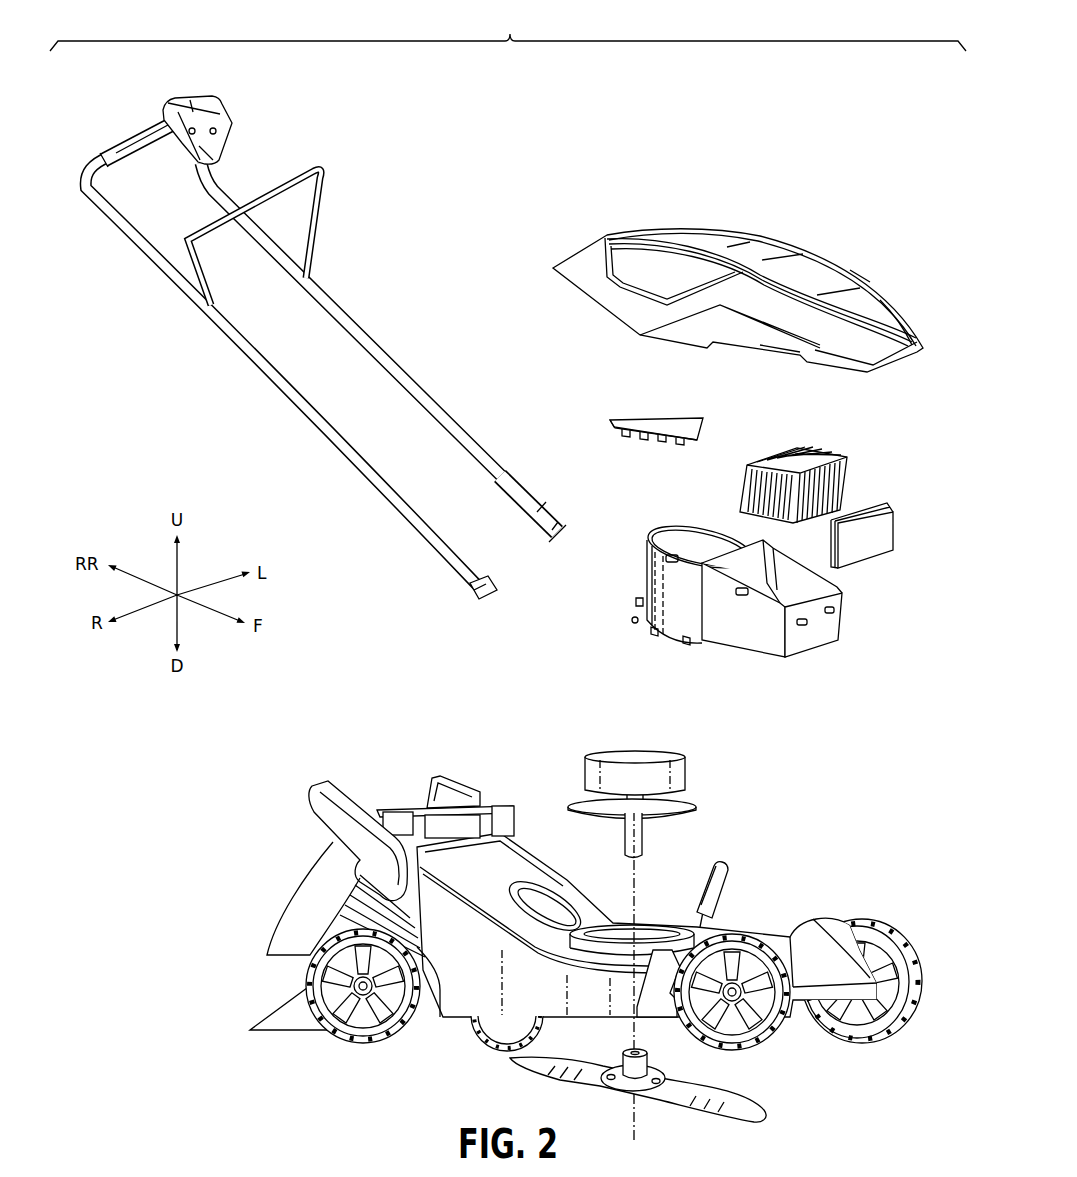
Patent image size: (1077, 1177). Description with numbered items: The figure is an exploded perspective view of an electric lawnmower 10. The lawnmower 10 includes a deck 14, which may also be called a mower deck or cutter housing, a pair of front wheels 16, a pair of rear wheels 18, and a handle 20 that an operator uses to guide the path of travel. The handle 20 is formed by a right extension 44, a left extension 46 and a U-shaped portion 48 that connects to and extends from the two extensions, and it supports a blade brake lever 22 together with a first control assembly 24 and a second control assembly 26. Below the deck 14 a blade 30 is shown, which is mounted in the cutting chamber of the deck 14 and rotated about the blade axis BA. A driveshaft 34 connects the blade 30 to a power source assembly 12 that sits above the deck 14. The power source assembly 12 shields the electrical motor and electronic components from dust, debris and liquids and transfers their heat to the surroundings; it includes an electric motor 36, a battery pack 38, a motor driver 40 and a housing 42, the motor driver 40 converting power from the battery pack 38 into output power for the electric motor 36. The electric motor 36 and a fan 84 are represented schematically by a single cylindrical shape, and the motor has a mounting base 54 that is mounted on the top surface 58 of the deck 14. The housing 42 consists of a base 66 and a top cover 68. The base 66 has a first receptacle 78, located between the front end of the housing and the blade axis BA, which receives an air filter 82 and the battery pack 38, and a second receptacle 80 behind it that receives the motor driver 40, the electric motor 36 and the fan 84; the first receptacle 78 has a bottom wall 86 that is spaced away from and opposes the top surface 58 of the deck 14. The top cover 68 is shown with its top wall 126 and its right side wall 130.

The electric lawnmower 10 is at (508, 28).
The power source assembly 12 is at (728, 294).
The deck 14 is at (538, 853).
The front wheels 16 is at (786, 1036).
The rear wheels 18 is at (370, 1045).
The handle 20 is at (500, 456).
The blade brake lever 22 is at (315, 165).
The first control assembly 24 is at (210, 110).
The second control assembly 26 is at (200, 100).
The blade 30 is at (692, 1112).
The driveshaft 34 is at (648, 833).
The electric motor 36 is at (679, 770).
The battery pack 38 is at (843, 478).
The motor driver 40 is at (646, 412).
The housing 42 is at (728, 442).
The right extension 44 is at (232, 352).
The left extension 46 is at (422, 380).
The U-shaped portion 48 is at (124, 142).
The mounting base 54 is at (706, 800).
The top surface 58 is at (757, 928).
The base 66 is at (815, 623).
The top cover 68 is at (572, 250).
The first receptacle 78 is at (815, 623).
The second receptacle 80 is at (688, 610).
The air filter 82 is at (868, 540).
The fan 84 is at (695, 775).
The bottom wall 86 is at (773, 652).
The top wall 126 is at (888, 314).
The right side wall 130 is at (775, 345).
The blade axis BA is at (642, 1033).